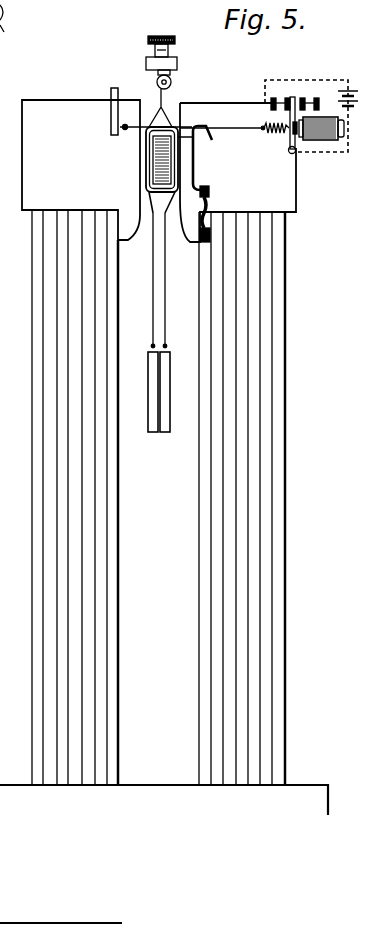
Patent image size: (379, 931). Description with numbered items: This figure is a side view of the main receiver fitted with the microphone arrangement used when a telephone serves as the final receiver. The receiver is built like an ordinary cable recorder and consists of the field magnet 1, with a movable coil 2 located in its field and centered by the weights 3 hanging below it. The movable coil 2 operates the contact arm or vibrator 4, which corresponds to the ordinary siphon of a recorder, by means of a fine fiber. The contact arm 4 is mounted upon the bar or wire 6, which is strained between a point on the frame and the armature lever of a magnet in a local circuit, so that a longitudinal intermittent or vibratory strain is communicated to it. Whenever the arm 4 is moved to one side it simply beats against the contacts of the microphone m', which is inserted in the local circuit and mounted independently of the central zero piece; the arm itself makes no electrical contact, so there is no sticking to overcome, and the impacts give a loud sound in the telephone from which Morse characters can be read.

The field magnet 1 is at (32, 387).
The movable coil 2 is at (146, 160).
The weights 3 is at (148, 390).
The contact arm or vibrator 4 is at (197, 160).
The microphone m' is at (218, 213).
The bar or wire 6 is at (259, 128).